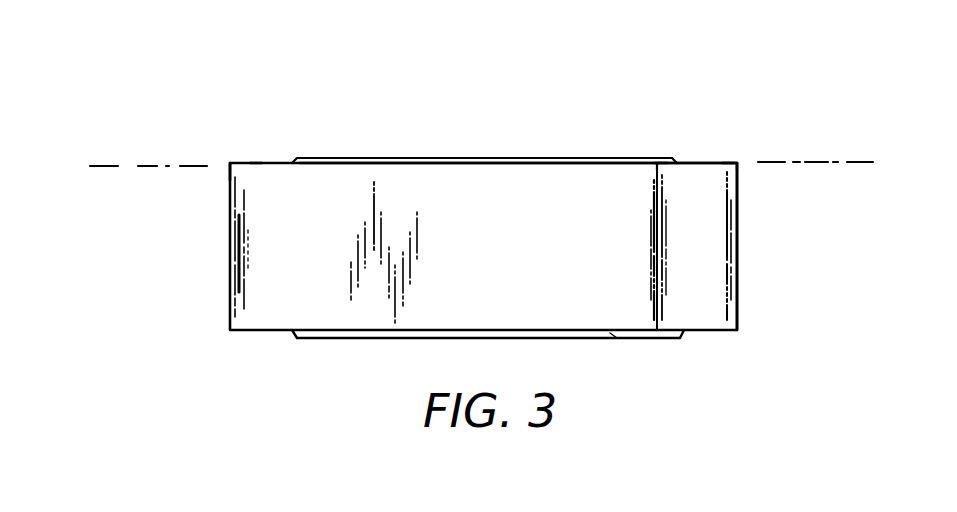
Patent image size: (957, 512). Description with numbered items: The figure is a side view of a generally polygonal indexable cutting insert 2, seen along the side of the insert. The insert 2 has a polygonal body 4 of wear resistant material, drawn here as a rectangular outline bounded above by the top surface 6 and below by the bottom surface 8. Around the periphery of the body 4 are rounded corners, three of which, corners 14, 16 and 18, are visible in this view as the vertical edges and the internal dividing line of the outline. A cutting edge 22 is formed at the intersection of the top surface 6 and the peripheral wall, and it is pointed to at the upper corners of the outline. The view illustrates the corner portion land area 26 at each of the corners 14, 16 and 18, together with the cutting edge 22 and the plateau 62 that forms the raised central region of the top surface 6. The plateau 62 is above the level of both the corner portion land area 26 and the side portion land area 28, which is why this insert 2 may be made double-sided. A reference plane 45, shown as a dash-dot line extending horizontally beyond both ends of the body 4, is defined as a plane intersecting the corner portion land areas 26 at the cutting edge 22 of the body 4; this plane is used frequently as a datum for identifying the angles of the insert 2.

The cutting insert 2 is at (236, 382).
The polygonal body 4 is at (248, 291).
The top surface 6 is at (396, 122).
The bottom surface 8 is at (394, 366).
The rounded corner 14 is at (748, 169).
The rounded corner 16 is at (647, 175).
The rounded corner 18 is at (216, 159).
The cutting edge 22 is at (231, 162).
The corner portion land area 26 is at (252, 158).
The side portion land area 28 is at (476, 162).
The reference plane 45 is at (127, 168).
The plateau 62 is at (533, 160).